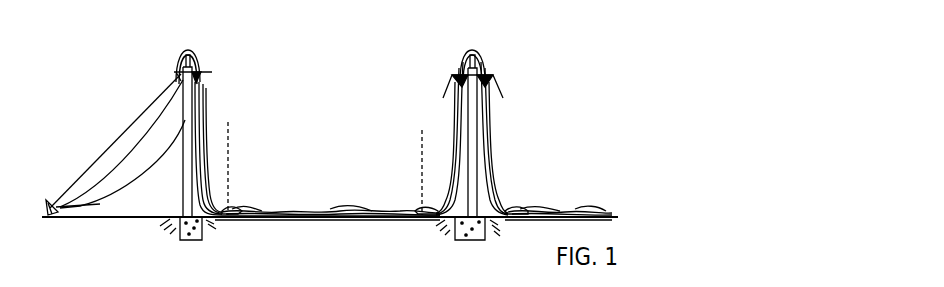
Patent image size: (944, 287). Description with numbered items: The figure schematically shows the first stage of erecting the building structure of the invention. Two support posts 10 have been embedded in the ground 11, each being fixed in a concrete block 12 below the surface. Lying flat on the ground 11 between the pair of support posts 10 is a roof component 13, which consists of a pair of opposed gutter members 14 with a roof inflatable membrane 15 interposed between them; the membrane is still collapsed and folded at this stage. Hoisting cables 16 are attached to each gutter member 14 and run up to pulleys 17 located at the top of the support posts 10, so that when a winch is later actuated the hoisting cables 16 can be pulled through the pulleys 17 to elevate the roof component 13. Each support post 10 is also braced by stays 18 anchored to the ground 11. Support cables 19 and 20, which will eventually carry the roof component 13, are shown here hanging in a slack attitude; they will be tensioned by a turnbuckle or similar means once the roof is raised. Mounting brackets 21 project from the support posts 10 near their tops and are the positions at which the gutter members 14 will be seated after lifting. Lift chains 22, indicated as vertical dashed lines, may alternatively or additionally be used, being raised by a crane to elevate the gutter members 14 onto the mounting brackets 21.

The support post 10 is at (186, 162).
The ground 11 is at (347, 255).
The concrete block 12 is at (195, 240).
The roof component 13 is at (331, 186).
The gutter member 14 is at (238, 208).
The roof inflatable membrane 15 is at (353, 203).
The hoisting cable 16 is at (199, 58).
The pulley 17 is at (189, 52).
The stay 18 is at (106, 182).
The support cable 19 is at (100, 206).
The support cable 20 is at (160, 110).
The mounting bracket 21 is at (206, 73).
The lift chain 22 is at (229, 126).